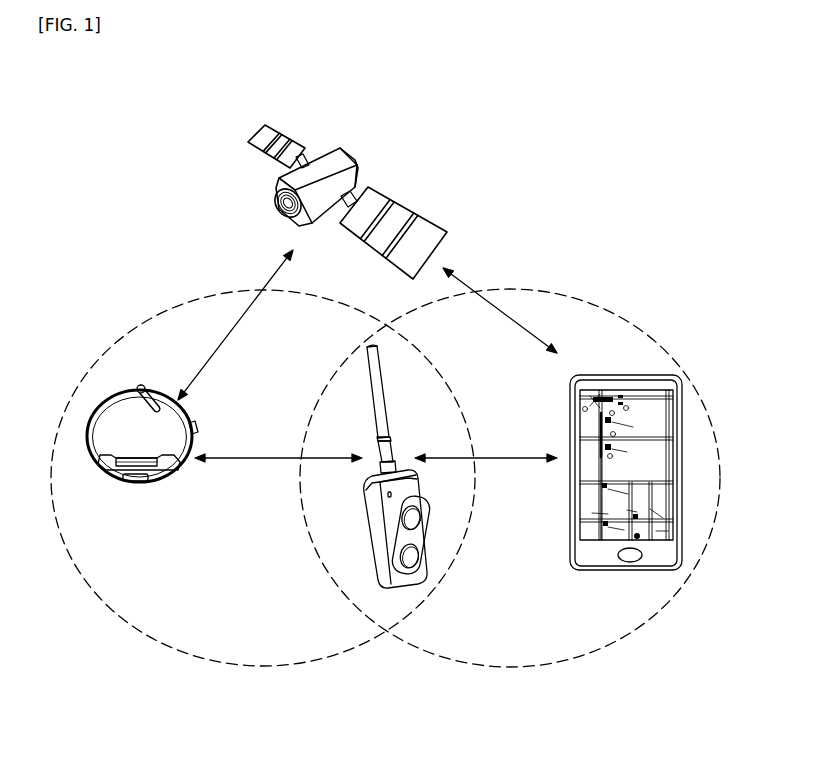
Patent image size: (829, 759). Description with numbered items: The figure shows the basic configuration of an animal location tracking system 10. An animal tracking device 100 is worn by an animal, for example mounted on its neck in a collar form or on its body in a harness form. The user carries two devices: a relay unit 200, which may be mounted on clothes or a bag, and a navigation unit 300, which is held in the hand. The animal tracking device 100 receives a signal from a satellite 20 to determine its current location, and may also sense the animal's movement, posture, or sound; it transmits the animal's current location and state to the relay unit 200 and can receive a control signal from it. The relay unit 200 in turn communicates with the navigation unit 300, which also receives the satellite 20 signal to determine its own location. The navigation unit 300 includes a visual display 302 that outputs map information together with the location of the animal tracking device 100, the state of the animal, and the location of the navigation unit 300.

The animal location tracking system 10 is at (537, 114).
The satellite 20 is at (328, 153).
The animal tracking device 100 is at (165, 470).
The relay unit 200 is at (422, 557).
The navigation unit 300 is at (658, 558).
The visual display 302 is at (648, 405).